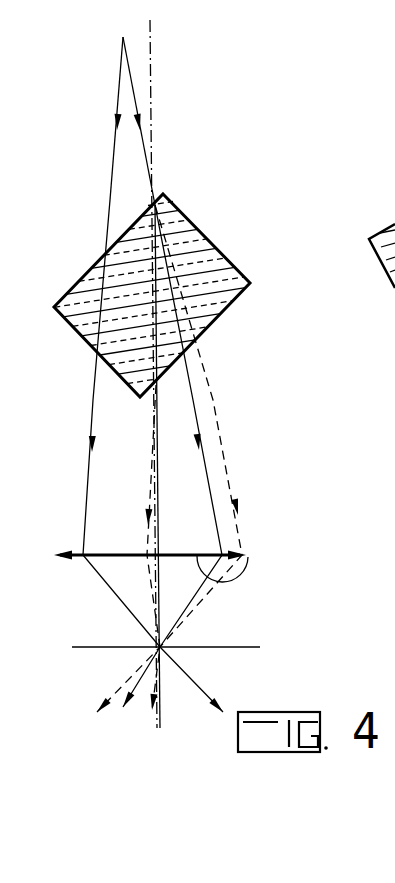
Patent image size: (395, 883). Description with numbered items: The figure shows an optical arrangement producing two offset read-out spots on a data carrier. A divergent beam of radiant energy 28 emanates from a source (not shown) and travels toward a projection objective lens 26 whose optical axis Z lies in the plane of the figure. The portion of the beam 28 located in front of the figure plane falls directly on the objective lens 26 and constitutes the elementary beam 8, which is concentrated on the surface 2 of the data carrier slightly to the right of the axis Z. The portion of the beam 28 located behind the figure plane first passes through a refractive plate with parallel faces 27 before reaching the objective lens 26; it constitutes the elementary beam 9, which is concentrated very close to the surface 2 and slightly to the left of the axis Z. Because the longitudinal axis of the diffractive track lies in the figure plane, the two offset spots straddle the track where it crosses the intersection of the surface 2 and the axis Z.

The surface of the data carrier 2 is at (198, 647).
The elementary beam 8 is at (86, 503).
The elementary beam 9 is at (151, 495).
The projection objective lens 26 is at (167, 554).
The refractive plate with parallel faces 27 is at (195, 226).
The divergent beam of radiant energy 28 is at (133, 82).
The optical axis Z is at (152, 84).